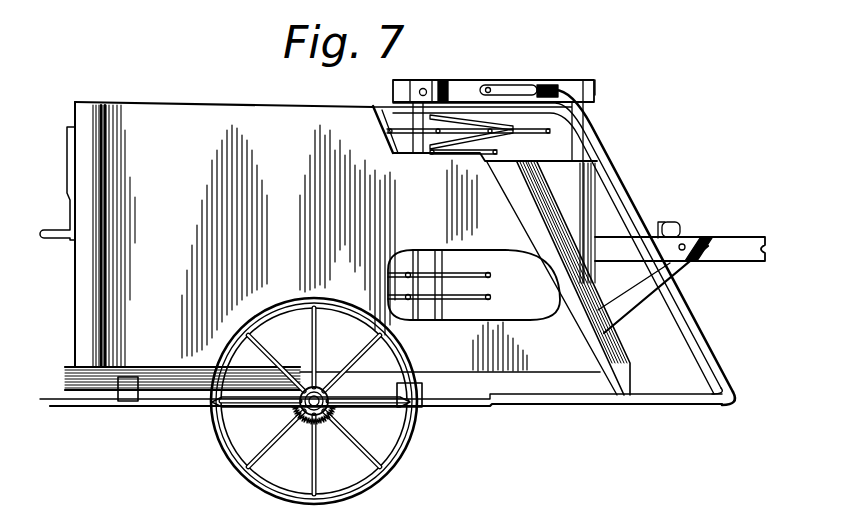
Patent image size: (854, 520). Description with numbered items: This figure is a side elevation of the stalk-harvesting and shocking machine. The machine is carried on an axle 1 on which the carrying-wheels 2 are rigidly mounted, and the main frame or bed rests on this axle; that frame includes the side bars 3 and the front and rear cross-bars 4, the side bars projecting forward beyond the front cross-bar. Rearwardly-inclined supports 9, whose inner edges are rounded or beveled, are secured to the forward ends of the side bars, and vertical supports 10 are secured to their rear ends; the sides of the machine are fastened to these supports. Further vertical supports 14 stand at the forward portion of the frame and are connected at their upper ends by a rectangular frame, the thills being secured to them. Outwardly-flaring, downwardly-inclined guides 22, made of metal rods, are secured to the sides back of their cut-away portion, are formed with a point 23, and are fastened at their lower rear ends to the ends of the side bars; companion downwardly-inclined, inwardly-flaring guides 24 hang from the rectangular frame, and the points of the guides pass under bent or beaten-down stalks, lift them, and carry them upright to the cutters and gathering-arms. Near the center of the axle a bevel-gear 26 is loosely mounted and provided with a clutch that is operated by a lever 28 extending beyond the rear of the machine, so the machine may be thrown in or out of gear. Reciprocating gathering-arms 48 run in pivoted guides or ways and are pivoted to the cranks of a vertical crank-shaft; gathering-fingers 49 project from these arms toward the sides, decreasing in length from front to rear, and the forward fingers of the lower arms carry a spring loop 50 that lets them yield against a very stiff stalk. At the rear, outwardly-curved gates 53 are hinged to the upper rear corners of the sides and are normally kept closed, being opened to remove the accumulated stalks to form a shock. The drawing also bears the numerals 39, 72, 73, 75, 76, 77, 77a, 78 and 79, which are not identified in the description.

The axle 1 is at (355, 378).
The carrying-wheels 2 is at (332, 246).
The side bars 3 is at (341, 393).
The front and rear cross-bars 4 is at (131, 401).
The rearwardly-inclined supports 9 is at (574, 322).
The vertical supports 10 is at (73, 273).
The vertical supports 14 is at (586, 150).
The guides 22 is at (633, 191).
The point 23 is at (738, 400).
The guides 24 is at (602, 116).
The bevel-gear 26 is at (304, 423).
The lever 28 is at (381, 411).
The lazy-tong links 39 is at (506, 142).
The gathering-arms 48 is at (389, 135).
The gathering-fingers 49 is at (406, 272).
The loop 50 is at (486, 300).
The gates 53 is at (72, 157).
The inclined partition 72 is at (378, 124).
The lining 73 is at (106, 290).
The bottom board 75 is at (407, 148).
The top block 76 is at (493, 81).
The boards / draft bar 77 is at (470, 248).
The opening 77a is at (492, 246).
The rear plank 78 is at (634, 362).
The panel 79 is at (570, 223).